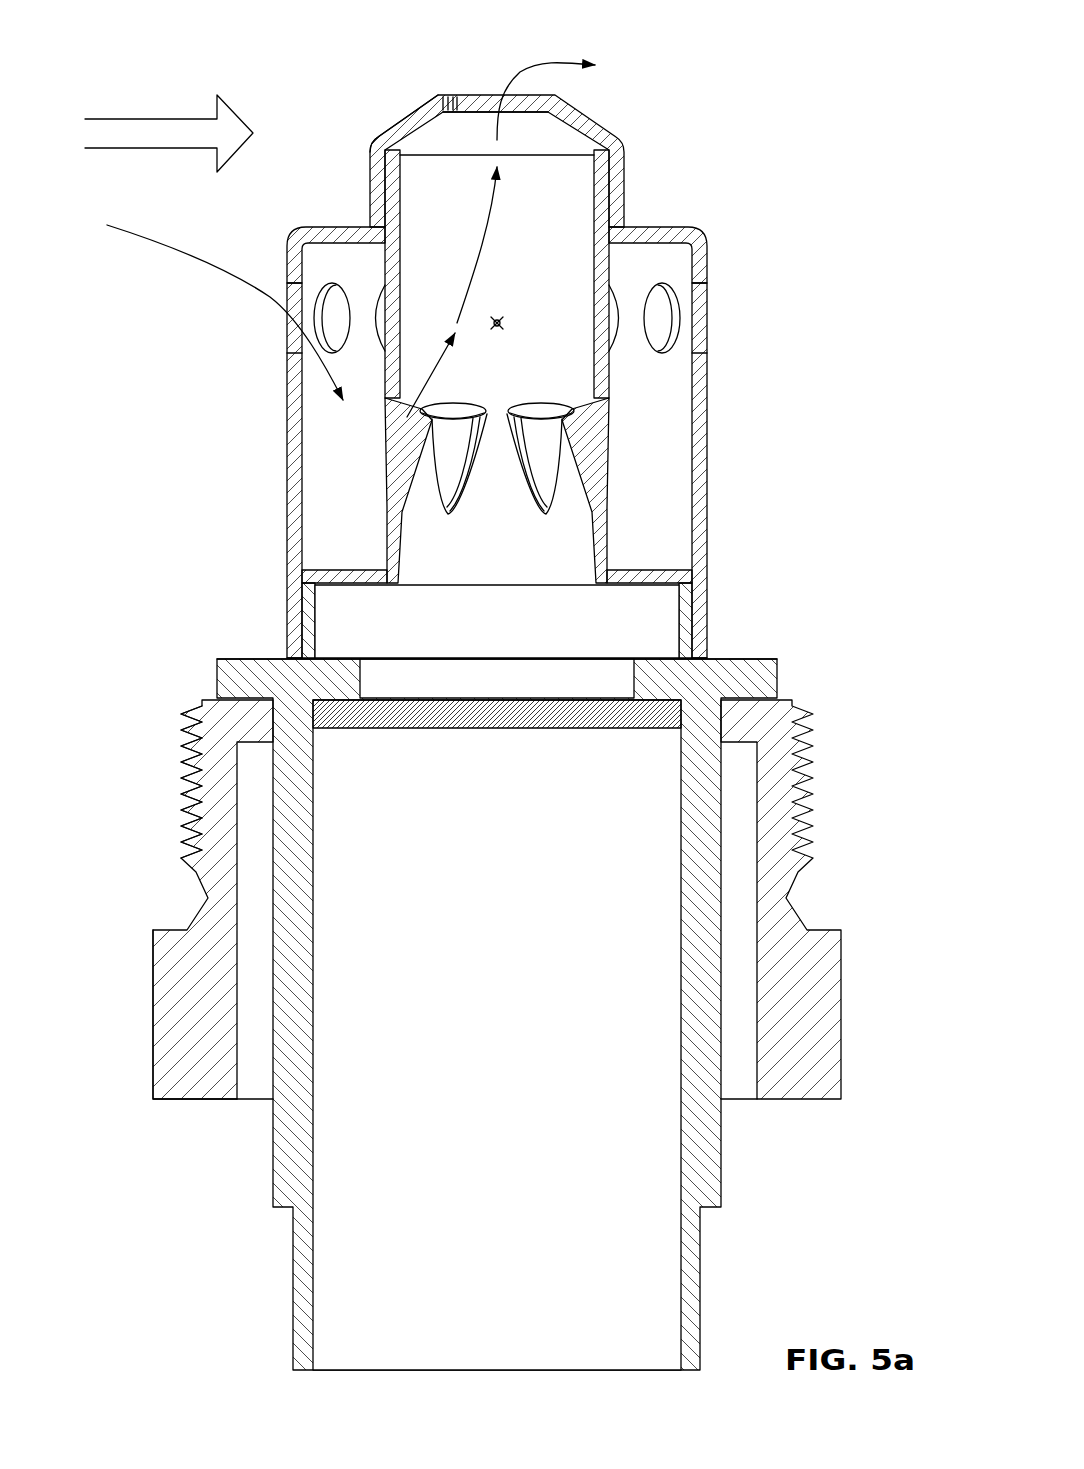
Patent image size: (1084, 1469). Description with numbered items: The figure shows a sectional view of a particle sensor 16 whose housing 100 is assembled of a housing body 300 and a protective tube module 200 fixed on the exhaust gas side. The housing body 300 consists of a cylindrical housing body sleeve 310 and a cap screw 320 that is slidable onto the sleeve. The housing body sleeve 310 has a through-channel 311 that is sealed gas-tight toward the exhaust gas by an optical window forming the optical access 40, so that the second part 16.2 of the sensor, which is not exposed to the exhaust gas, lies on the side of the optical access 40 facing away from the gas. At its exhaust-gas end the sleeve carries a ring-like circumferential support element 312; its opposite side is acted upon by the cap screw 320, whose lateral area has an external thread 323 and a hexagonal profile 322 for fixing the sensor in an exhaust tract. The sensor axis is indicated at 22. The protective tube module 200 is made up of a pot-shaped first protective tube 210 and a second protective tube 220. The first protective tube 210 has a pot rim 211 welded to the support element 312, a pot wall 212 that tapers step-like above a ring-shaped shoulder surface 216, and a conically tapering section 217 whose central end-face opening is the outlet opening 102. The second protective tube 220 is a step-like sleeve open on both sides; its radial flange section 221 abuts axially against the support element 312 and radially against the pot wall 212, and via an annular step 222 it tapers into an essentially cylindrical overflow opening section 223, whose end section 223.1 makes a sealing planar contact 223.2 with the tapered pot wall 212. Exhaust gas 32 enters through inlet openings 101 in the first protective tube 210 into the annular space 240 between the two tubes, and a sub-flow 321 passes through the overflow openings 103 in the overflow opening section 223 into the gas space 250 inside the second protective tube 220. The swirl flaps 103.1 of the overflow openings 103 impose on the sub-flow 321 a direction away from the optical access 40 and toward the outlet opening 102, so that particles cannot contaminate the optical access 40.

The particle sensor 16 is at (860, 420).
The second part of particle sensor 16.2 is at (522, 886).
The longitudinal axis 22 is at (500, 322).
The exhaust gas 32 is at (123, 119).
The optical access 40 is at (532, 712).
The housing 100 is at (848, 548).
The inlet openings 101 is at (296, 343).
The outlet opening 102 is at (483, 98).
The overflow openings 103 is at (417, 414).
The swirl flaps 103.1 is at (407, 470).
The protective tube module 200 is at (752, 262).
The first protective tube 210 is at (710, 522).
The pot rim 211 is at (297, 652).
The pot wall 212 is at (372, 160).
The ring-shaped shoulder surface 216 is at (330, 235).
The conically tapering section 217 is at (420, 120).
The second protective tube 220 is at (613, 388).
The radial flange section 221 is at (308, 623).
The annular step 222 is at (350, 577).
The overflow opening section 223 is at (604, 362).
The end section 223.1 is at (606, 180).
The sealing and planar contact 223.2 is at (623, 205).
The annular space 240 is at (365, 506).
The gas space 250 is at (518, 384).
The housing body 300 is at (850, 862).
The housing body sleeve 310 is at (522, 1014).
The through-channel 311 is at (517, 1136).
The support element 312 is at (755, 678).
The cap screw 320 is at (445, 899).
The sub-flow 321 is at (562, 58).
The hexagonal profile 322 is at (153, 1025).
The external thread 323 is at (190, 770).